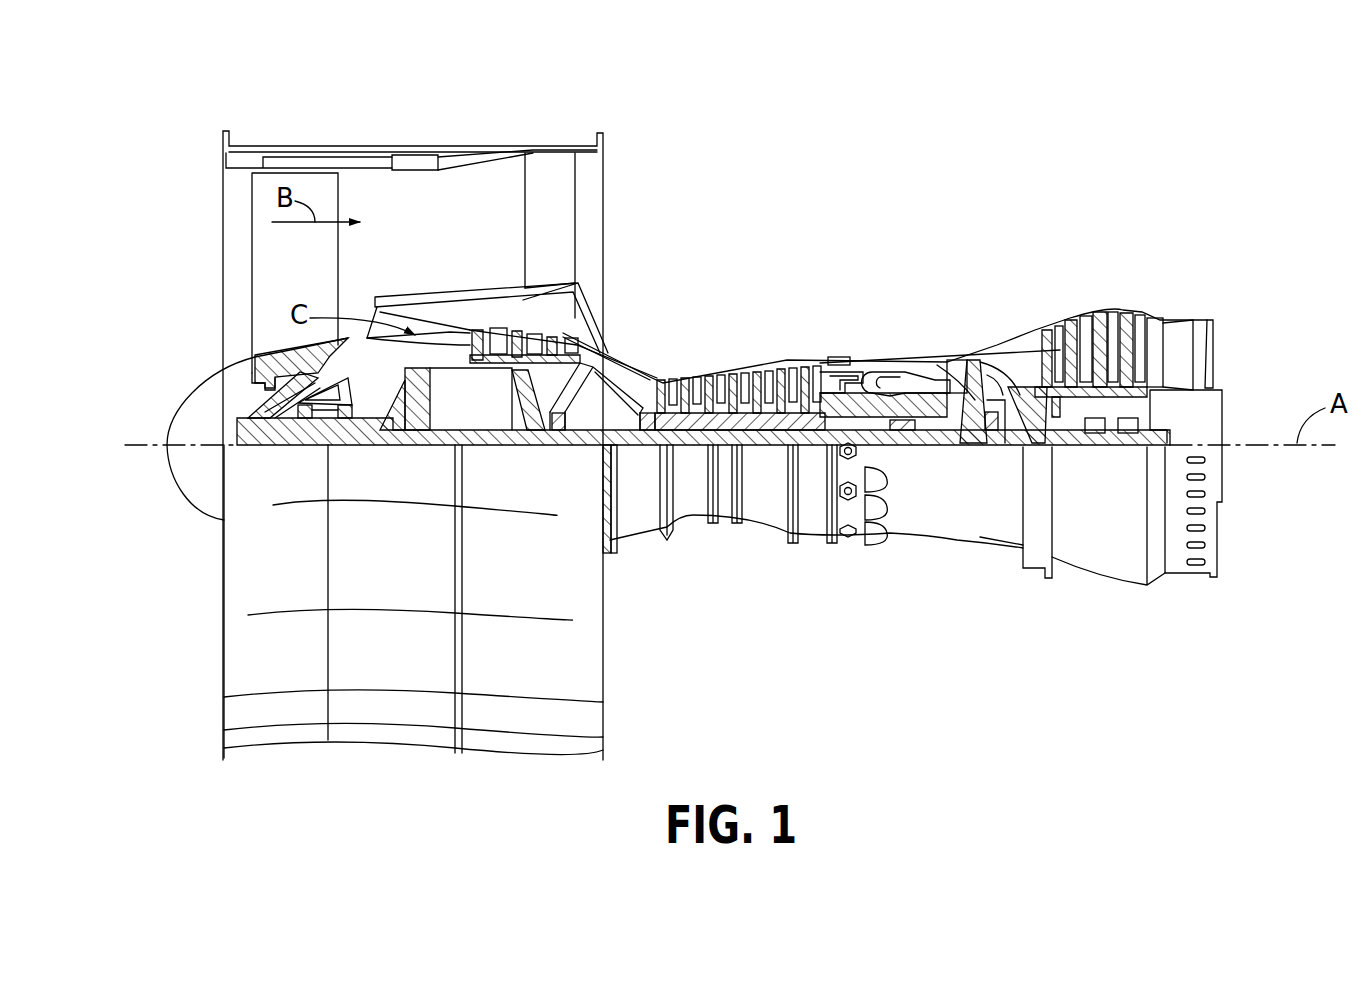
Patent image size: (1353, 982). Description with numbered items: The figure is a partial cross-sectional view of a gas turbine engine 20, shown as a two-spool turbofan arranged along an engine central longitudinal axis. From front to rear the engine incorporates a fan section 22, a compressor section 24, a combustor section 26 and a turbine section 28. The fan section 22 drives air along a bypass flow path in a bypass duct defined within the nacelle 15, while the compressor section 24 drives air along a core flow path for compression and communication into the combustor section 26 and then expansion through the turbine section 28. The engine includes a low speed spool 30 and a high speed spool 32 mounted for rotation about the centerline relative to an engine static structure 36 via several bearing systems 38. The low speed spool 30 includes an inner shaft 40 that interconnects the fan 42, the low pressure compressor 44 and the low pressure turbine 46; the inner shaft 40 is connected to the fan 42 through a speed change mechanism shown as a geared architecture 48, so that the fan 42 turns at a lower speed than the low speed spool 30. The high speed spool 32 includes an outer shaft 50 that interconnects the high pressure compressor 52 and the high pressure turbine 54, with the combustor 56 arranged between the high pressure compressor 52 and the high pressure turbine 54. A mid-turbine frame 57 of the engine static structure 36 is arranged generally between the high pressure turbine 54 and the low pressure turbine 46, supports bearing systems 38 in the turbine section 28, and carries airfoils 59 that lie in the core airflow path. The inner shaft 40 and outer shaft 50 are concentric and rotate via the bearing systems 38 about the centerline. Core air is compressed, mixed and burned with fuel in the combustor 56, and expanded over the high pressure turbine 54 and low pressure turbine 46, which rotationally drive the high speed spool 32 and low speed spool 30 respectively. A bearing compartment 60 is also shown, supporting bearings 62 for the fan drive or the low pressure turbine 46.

The nacelle 15 is at (402, 150).
The gas turbine engine 20 is at (896, 195).
The fan section 22 is at (345, 112).
The compressor section 24 is at (658, 333).
The combustor section 26 is at (890, 325).
The turbine section 28 is at (1046, 290).
The low speed spool 30 is at (772, 452).
The high speed spool 32 is at (798, 380).
The engine static structure 36 is at (808, 542).
The bearing systems 38 is at (560, 420).
The inner shaft 40 is at (618, 447).
The fan 42 is at (303, 277).
The low pressure compressor 44 is at (522, 310).
The low pressure turbine 46 is at (1088, 330).
The geared architecture 48 is at (408, 432).
The outer shaft 50 is at (900, 443).
The high pressure compressor 52 is at (753, 377).
The high pressure turbine 54 is at (955, 350).
The combustor 56 is at (883, 380).
The mid-turbine frame 57 is at (1006, 341).
The airfoils 59 is at (1073, 447).
The bearing compartment 60 is at (1195, 423).
The bearings 62 is at (1130, 447).